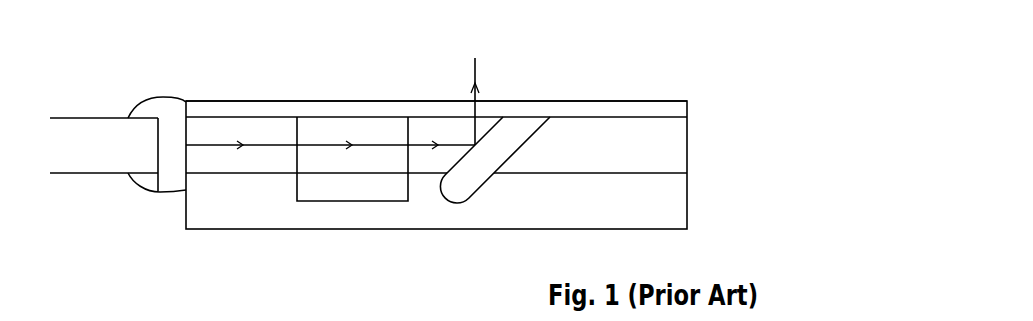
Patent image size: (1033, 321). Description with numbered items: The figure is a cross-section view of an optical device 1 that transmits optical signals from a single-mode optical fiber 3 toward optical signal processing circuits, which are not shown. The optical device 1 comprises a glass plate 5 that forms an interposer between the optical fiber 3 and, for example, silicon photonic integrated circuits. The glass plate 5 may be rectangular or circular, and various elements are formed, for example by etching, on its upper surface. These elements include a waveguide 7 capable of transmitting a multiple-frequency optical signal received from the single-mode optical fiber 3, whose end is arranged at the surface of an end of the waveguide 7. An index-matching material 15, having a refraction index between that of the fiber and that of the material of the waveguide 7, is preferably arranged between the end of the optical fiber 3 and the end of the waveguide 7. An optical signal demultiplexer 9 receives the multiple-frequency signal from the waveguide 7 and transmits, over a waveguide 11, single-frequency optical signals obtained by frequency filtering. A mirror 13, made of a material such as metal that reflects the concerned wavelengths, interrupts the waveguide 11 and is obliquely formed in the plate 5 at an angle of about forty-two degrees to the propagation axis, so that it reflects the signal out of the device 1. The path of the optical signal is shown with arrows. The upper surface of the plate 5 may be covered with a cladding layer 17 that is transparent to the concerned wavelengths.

The optical device 1 is at (612, 73).
The single-mode optical fiber 3 is at (100, 148).
The glass plate 5 is at (688, 195).
The waveguide 7 is at (207, 160).
The optical signal demultiplexer 9 is at (347, 180).
The waveguide 11 is at (423, 162).
The mirror 13 is at (467, 187).
The index-matching material 15 is at (160, 193).
The cladding layer 17 is at (672, 108).